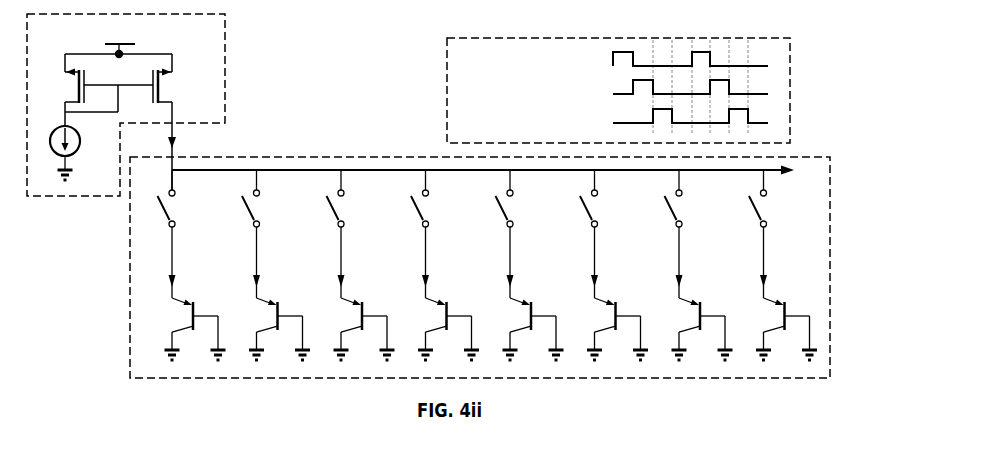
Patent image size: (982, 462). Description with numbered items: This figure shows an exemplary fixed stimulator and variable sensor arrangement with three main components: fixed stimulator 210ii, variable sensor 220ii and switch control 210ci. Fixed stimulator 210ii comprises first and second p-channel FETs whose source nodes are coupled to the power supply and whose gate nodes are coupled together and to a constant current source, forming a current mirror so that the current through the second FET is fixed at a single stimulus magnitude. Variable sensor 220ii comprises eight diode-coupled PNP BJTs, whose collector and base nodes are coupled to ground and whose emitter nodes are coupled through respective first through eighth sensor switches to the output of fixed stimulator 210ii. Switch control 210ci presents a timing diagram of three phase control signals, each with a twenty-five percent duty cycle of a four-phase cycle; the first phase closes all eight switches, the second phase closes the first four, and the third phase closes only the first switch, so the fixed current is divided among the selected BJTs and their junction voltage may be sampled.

The fixed stimulator 210ii is at (215, 39).
The switch control 210ci is at (512, 134).
The variable sensor 220ii is at (823, 267).